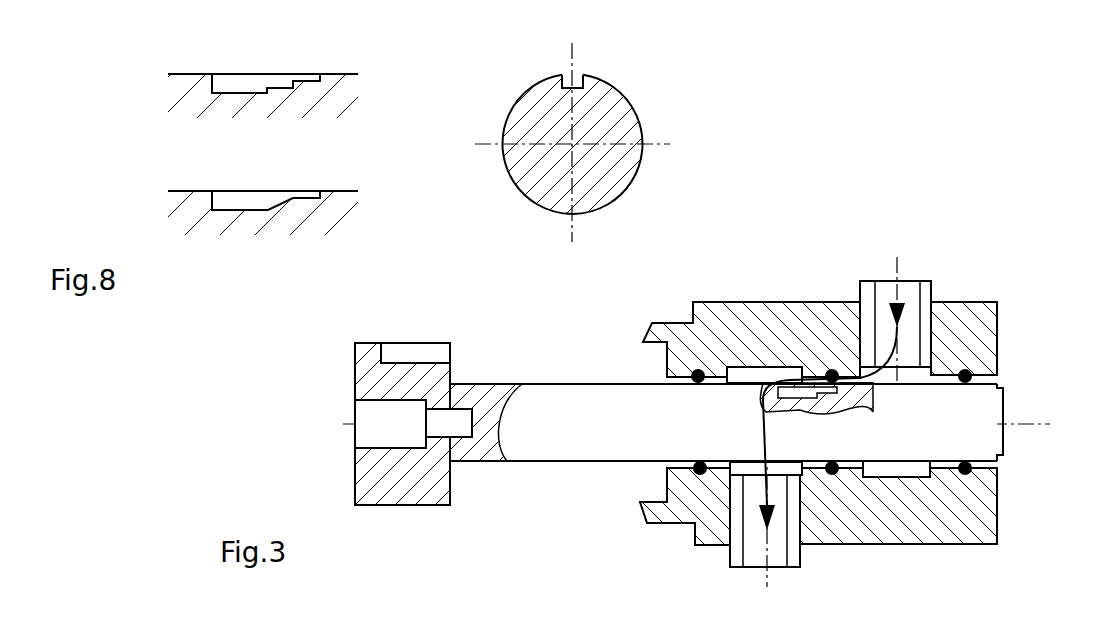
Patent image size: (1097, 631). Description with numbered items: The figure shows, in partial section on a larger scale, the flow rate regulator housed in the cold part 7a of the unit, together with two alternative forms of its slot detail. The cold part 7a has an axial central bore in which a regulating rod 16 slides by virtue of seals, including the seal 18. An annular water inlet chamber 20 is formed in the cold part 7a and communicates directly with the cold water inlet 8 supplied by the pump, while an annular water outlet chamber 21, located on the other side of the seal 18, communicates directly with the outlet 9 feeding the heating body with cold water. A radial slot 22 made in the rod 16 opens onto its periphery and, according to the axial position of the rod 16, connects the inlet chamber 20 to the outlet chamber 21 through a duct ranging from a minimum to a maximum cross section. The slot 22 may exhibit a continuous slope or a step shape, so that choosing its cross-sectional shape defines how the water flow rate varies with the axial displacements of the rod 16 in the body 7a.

In FIG. 8, the regulating rod 16 is at (342, 210).
In FIG. 3, the regulating rod 16 is at (596, 400).
In FIG. 8, the radial slot 22 is at (246, 74).
In FIG. 3, the radial slot 22 is at (792, 392).
In FIG. 3, the water outlet chamber 21 is at (740, 367).
In FIG. 3, the seal 18 is at (831, 369).
In FIG. 3, the cold water inlet 8 is at (906, 290).
In FIG. 3, the outlet 9 is at (758, 553).
In FIG. 3, the water inlet chamber 20 is at (888, 477).
In FIG. 3, the cold part 7a is at (983, 532).